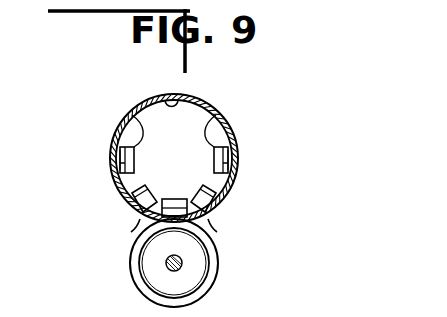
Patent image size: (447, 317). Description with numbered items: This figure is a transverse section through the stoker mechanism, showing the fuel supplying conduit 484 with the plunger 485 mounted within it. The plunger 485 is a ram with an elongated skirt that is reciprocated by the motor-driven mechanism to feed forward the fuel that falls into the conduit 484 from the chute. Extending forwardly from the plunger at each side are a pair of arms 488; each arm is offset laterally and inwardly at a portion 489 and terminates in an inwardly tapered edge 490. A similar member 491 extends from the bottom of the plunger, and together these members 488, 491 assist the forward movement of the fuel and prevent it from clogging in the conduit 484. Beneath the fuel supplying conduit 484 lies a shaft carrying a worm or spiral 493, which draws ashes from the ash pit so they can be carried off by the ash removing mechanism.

The fuel supplying conduit 484 is at (162, 98).
The plunger 485 is at (141, 131).
The arms 488 is at (110, 154).
The laterally and inwardly offset portion 489 is at (131, 123).
The inwardly tapered edge 490 is at (118, 172).
The bottom member 491 is at (143, 222).
The worm or spiral 493 is at (180, 259).